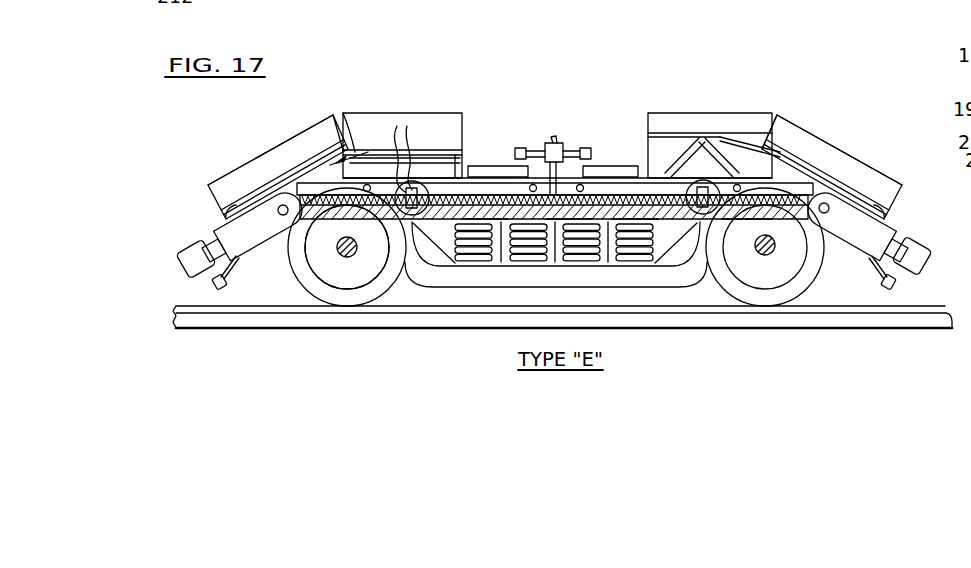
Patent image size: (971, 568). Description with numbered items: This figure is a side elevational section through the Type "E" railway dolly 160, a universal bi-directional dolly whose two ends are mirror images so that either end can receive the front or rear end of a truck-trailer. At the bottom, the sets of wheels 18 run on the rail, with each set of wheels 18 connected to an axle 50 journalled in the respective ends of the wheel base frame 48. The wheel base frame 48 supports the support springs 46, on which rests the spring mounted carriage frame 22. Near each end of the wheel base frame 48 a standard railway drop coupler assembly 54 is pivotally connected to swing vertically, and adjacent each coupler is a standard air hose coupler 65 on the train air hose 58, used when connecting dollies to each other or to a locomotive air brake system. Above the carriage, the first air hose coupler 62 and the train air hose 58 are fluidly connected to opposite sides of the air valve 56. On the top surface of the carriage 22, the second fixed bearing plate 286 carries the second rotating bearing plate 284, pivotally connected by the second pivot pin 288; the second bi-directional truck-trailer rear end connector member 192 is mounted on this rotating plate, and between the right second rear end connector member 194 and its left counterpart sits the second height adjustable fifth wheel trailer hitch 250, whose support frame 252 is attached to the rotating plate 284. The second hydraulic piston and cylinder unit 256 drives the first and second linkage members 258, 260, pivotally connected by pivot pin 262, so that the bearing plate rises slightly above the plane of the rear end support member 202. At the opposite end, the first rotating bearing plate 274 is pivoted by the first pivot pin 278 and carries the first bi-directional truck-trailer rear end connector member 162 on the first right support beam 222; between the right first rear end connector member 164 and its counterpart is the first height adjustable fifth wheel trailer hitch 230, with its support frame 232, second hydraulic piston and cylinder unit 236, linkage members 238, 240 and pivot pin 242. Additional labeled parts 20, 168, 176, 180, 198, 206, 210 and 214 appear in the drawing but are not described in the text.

The wheels 18 is at (290, 282).
The rail 20 is at (937, 307).
The spring mounted carriage frame 22 is at (346, 247).
The support springs 46 is at (648, 240).
The wheel base frame 48 is at (658, 278).
The axles 50 is at (347, 252).
The railway drop coupler assembly 54 is at (185, 250).
The air valve 56 is at (553, 138).
The train air hose 58 is at (230, 268).
The first air hose coupler 62 is at (588, 148).
The air hose coupler 65 is at (218, 280).
The Type "E" railway dolly 160 is at (608, 68).
The first bi-directional truck-trailer rear end connector member 162 is at (850, 106).
The right first rear end connector member 164 is at (896, 217).
The right pivot 168 is at (883, 202).
The brace 176 is at (767, 112).
The right plate 180 is at (863, 156).
The second bi-directional truck-trailer rear end connector member 192 is at (258, 132).
The right second rear end connector member 194 is at (205, 224).
The left pivot 198 is at (222, 203).
The rear end support member 202 is at (342, 120).
The left housing 206 is at (397, 112).
The left plate 210 is at (247, 159).
The bolster bar 214 is at (468, 165).
The first right support beam 222 is at (767, 167).
The first height adjustable fifth wheel trailer hitch 230 is at (797, 131).
The fifth wheel hitch support frame 232 is at (800, 182).
The second hydraulic piston and cylinder unit 236 is at (602, 167).
The linkage member 238 is at (690, 184).
The linkage member 240 is at (720, 138).
The pivot pin 242 is at (700, 140).
The second height adjustable fifth wheel trailer hitch 250 is at (340, 158).
The fifth wheel hitch support frame 252 is at (297, 181).
The second hydraulic piston and cylinder unit 256 is at (510, 167).
The first linkage member 258 is at (402, 138).
The second linkage member 260 is at (410, 153).
The pivot pin 262 is at (414, 153).
The first rotating bearing plate 274 is at (637, 211).
The first pivot pin 278 is at (747, 211).
The second rotating bearing plate 284 is at (487, 211).
The second fixed bearing plate 286 is at (571, 211).
The second pivot pin 288 is at (554, 208).